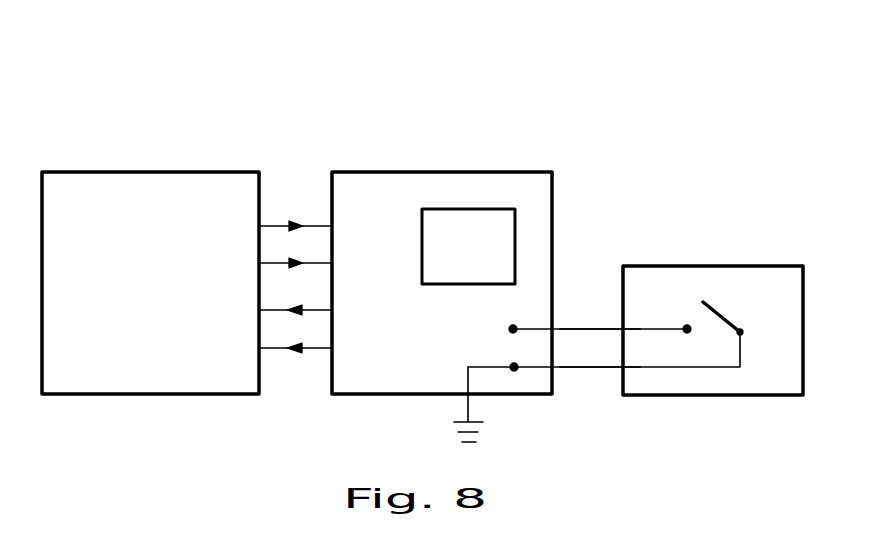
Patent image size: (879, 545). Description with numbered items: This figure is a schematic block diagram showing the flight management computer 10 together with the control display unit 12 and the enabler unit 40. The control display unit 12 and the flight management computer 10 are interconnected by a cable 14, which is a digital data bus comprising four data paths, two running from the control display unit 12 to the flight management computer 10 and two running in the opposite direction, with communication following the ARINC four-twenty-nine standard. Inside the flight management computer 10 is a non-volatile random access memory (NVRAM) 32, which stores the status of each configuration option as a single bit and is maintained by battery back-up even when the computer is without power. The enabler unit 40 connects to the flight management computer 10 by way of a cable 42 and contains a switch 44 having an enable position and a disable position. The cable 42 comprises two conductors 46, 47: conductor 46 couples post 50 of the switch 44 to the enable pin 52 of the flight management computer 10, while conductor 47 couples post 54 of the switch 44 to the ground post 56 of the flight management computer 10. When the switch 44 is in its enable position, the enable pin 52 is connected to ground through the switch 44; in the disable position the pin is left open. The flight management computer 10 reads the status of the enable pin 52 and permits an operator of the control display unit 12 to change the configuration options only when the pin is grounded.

The control display unit 12 is at (122, 171).
The cable 14 is at (290, 207).
The flight management computer 10 is at (484, 171).
The non-volatile random access memory (NVRAM) 32 is at (422, 256).
The cable 42 is at (583, 320).
The enabler unit 40 is at (675, 266).
The switch 44 is at (735, 317).
The post 50 is at (687, 326).
The enable pin 52 is at (513, 326).
The post 54 is at (743, 330).
The ground post 56 is at (514, 363).
The conductor 46 is at (565, 332).
The conductor 47 is at (600, 368).